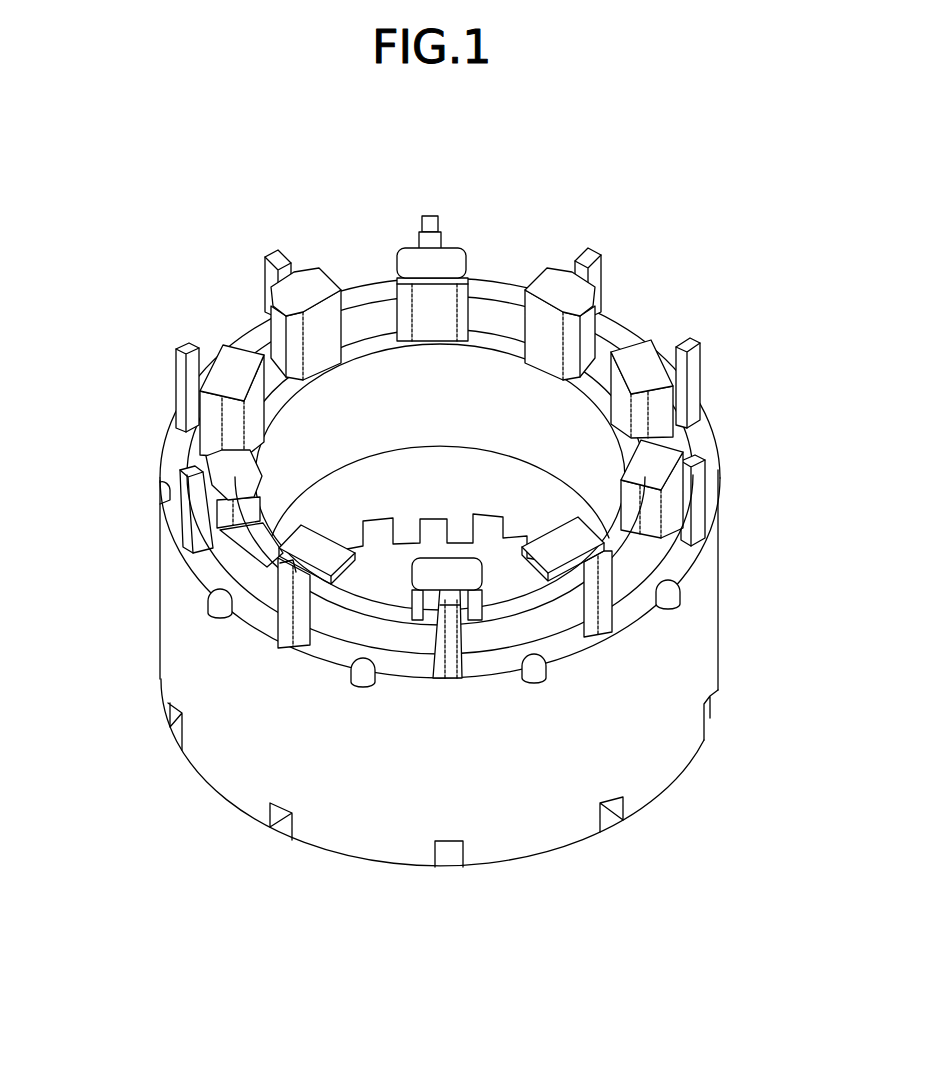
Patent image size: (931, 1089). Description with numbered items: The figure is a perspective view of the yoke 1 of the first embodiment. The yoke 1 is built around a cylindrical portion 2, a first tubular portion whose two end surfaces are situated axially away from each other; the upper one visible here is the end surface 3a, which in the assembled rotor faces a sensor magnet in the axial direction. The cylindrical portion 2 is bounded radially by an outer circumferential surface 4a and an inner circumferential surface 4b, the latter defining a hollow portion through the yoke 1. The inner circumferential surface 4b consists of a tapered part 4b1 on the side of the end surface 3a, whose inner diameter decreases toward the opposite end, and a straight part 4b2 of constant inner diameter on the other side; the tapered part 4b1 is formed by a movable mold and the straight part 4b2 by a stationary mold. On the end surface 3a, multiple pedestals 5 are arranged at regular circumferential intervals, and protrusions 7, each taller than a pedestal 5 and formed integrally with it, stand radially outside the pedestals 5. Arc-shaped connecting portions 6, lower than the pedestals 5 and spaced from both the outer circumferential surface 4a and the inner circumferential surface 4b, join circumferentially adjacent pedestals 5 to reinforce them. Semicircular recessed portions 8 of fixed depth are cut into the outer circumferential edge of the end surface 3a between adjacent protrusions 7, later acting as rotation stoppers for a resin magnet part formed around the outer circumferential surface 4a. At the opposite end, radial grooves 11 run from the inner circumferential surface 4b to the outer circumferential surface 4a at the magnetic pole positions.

The yoke 1 is at (742, 232).
The cylindrical portion 2 is at (670, 765).
The end surface 3a is at (677, 560).
The outer circumferential surface 4a is at (676, 653).
The inner circumferential surface 4b is at (368, 388).
The tapered part 4b1 is at (494, 387).
The straight part 4b2 is at (463, 474).
The pedestal 5 is at (440, 384).
The connecting portion 6 is at (237, 565).
The protrusion 7 is at (586, 256).
The recessed portion 8 is at (212, 603).
The groove 11 is at (287, 818).